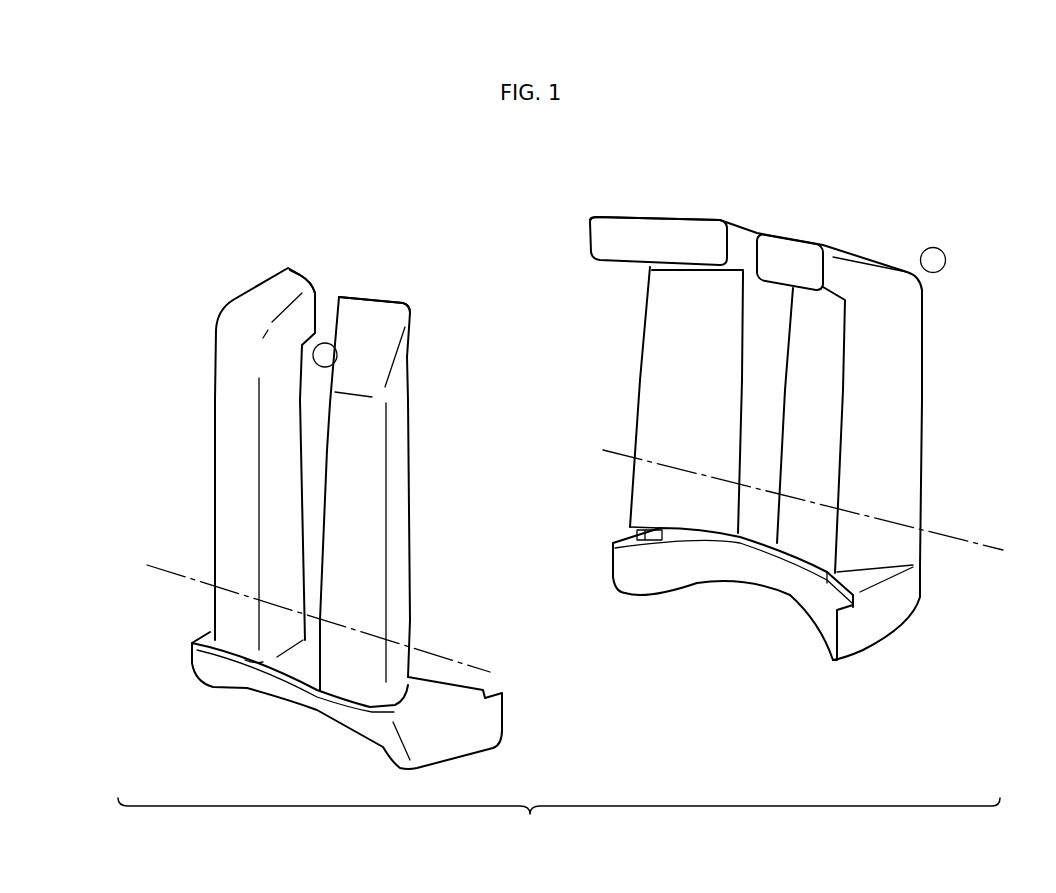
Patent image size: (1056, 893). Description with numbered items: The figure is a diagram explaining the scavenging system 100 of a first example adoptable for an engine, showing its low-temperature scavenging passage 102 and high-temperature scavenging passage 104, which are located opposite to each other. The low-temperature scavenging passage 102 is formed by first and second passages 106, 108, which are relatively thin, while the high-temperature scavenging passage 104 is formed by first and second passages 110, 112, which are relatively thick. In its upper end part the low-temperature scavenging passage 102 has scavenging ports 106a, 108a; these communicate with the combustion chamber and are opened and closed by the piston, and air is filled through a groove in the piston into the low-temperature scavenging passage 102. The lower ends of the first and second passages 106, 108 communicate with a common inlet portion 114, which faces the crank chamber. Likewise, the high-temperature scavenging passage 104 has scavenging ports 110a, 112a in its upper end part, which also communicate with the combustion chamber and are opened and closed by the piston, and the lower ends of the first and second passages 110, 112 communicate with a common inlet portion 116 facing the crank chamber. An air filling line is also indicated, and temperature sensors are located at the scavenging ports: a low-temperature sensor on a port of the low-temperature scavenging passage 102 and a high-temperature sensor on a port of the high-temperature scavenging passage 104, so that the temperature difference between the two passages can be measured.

The scavenging system 100 is at (574, 508).
The low-temperature scavenging passage 102 is at (205, 280).
The high-temperature scavenging passage 104 is at (995, 190).
The first passage 106 is at (395, 552).
The scavenging port 106a is at (381, 300).
The second passage 108 is at (220, 508).
The scavenging port 108a is at (309, 275).
The first passage 110 is at (907, 427).
The scavenging port 110a is at (790, 248).
The second passage 112 is at (660, 354).
The scavenging port 112a is at (630, 228).
The common inlet portion 114 is at (487, 740).
The common inlet portion 116 is at (868, 632).